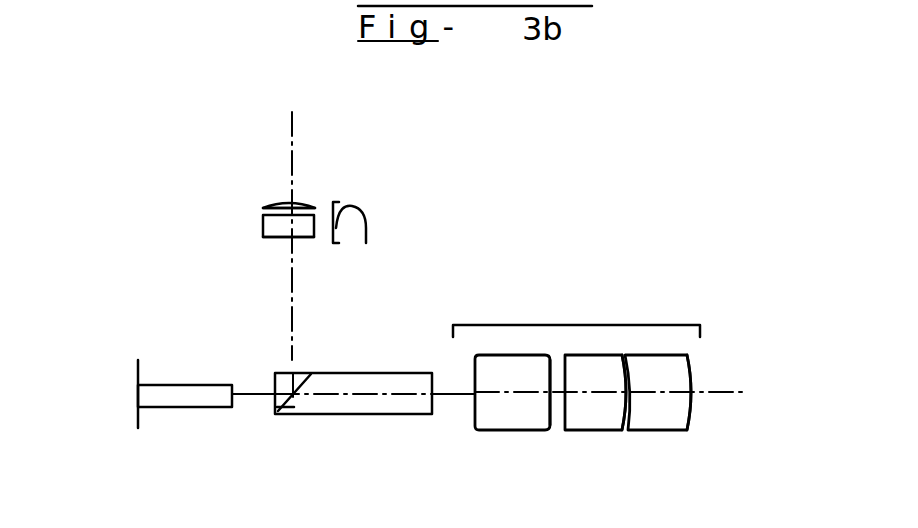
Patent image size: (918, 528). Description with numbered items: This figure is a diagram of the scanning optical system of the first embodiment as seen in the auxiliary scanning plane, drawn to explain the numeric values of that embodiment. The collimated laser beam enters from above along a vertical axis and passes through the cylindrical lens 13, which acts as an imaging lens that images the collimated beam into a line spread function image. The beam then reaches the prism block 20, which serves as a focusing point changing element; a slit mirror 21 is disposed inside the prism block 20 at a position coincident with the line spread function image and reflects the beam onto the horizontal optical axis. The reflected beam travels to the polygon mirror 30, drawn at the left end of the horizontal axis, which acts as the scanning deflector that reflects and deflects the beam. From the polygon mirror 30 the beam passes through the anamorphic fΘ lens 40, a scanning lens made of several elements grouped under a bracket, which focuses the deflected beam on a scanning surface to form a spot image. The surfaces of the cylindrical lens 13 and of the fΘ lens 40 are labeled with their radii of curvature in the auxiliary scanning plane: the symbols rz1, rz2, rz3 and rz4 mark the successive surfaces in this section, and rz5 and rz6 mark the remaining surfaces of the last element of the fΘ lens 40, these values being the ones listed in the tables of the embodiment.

The cylindrical lens 13 is at (362, 241).
The prism block 20 is at (356, 370).
The slit mirror 21 is at (294, 411).
The polygon mirror 30 is at (192, 385).
The anamorphic fΘ lens 40 is at (592, 325).
The radius of curvature in the auxiliary scanning plane (first surface) rz1 is at (277, 203).
The radius of curvature in the auxiliary scanning plane (second surface) rz2 is at (268, 207).
The radius of curvature in the auxiliary scanning plane (third surface) rz3 is at (268, 224).
The radius of curvature in the auxiliary scanning plane (fourth surface) rz4 is at (268, 239).
The radius of curvature in the auxiliary scanning plane (fifth surface) rz5 is at (631, 426).
The radius of curvature in the auxiliary scanning plane (sixth surface) rz6 is at (690, 410).